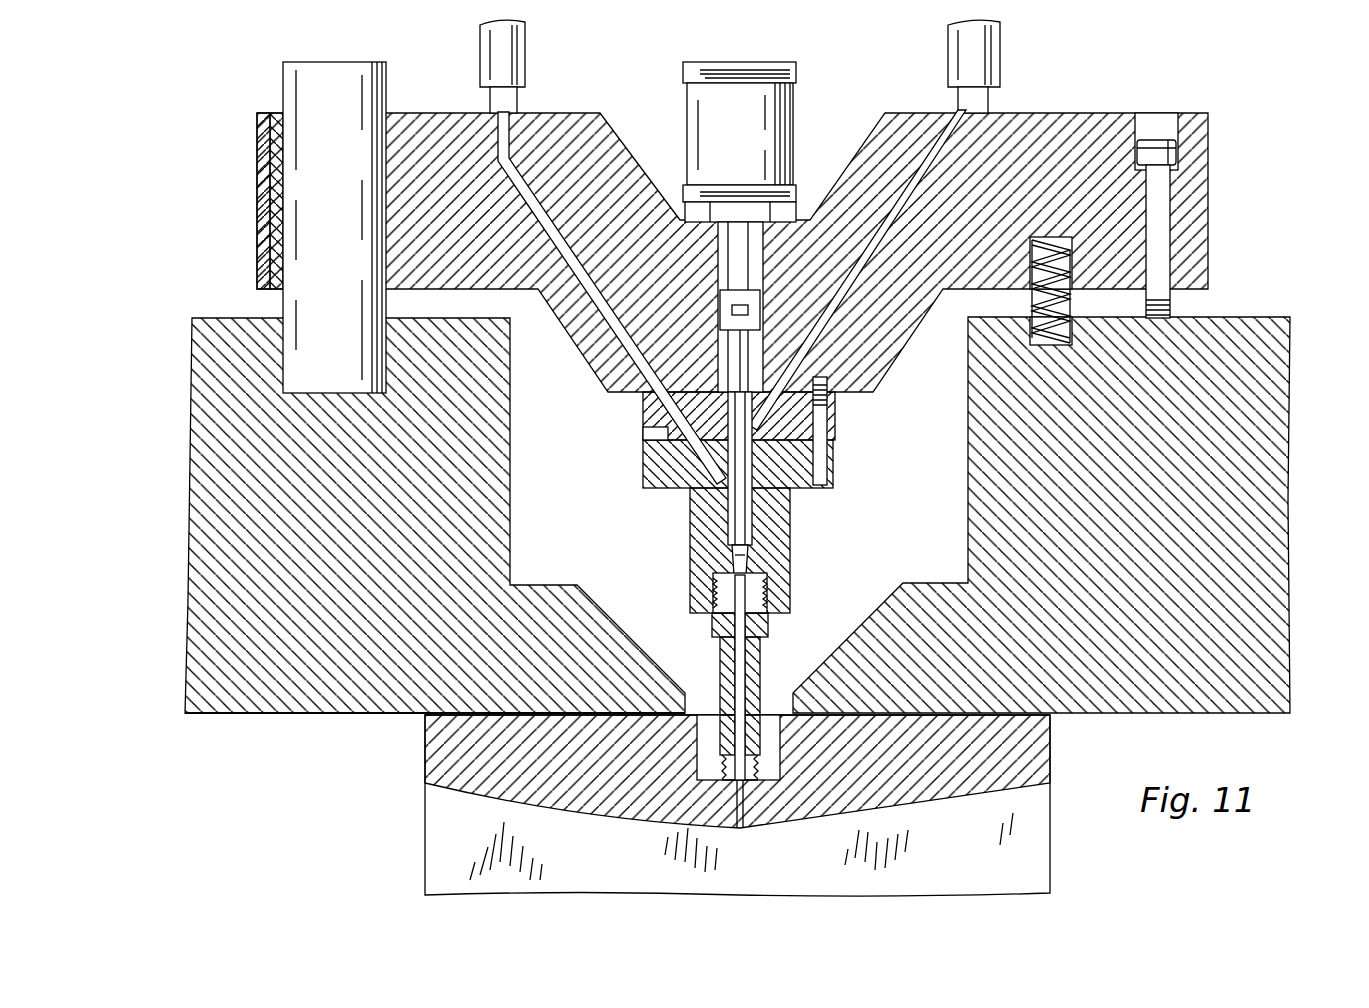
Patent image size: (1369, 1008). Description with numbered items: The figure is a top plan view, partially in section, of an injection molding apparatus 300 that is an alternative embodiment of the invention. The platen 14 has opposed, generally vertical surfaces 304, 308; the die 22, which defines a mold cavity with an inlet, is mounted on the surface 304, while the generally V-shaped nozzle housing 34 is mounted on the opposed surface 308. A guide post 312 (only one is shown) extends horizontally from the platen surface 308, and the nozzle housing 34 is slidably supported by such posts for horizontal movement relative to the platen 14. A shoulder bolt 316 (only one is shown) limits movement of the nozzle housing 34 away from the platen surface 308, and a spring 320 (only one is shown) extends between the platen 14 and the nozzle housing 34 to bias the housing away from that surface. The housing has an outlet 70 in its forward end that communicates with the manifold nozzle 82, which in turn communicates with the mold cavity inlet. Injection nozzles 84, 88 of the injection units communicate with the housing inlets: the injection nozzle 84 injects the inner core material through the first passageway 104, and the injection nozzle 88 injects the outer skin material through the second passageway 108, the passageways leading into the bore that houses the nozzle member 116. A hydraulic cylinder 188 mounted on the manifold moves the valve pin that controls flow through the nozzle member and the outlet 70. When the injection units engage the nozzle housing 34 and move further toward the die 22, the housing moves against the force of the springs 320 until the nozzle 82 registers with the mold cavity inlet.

The platen 14 is at (1258, 494).
The die 22 is at (430, 838).
The nozzle housing 34 is at (1210, 208).
The outlet 70 is at (738, 566).
The nozzle 82 is at (762, 664).
The injection nozzle 84 is at (992, 48).
The injection nozzle 88 is at (520, 47).
The first passageway 104 is at (892, 230).
The second passageway 108 is at (590, 276).
The nozzle member 116 is at (734, 502).
The hydraulic cylinder 188 is at (816, 80).
The injection molding apparatus 300 is at (804, 315).
The platen surface 304 is at (240, 716).
The platen surface 308 is at (192, 318).
The guide post 312 is at (350, 75).
The shoulder bolt 316 is at (1185, 156).
The spring 320 is at (1028, 276).